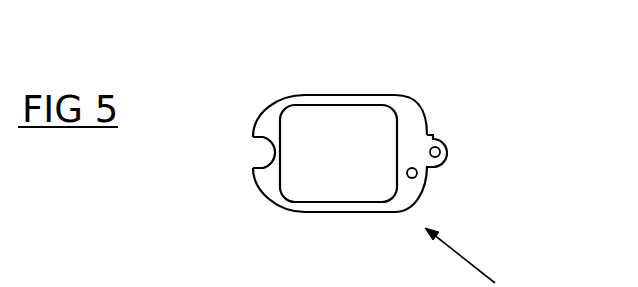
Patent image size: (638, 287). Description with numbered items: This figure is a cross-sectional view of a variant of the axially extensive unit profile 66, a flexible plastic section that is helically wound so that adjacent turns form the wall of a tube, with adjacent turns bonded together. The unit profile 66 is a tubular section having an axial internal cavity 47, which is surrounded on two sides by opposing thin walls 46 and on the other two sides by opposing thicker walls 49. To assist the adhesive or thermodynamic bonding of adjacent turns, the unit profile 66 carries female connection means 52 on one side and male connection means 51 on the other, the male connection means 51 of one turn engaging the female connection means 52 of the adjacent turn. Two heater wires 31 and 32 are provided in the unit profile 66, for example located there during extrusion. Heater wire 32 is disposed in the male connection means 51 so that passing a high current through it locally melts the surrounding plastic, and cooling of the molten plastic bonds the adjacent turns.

The thin walls 46 is at (322, 207).
The axial internal cavity 47 is at (305, 168).
The thicker walls 49 is at (267, 123).
The female connection means 52 is at (268, 152).
The male connection means 51 is at (447, 155).
The heater wire 32 is at (438, 149).
The heater wire 31 is at (418, 178).
The unit profile 66 is at (473, 257).